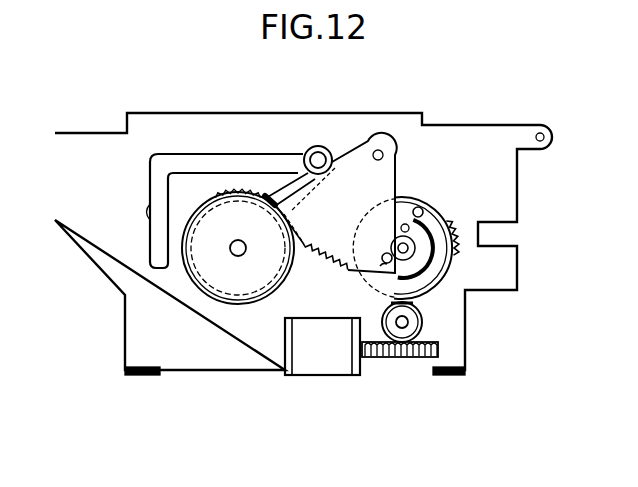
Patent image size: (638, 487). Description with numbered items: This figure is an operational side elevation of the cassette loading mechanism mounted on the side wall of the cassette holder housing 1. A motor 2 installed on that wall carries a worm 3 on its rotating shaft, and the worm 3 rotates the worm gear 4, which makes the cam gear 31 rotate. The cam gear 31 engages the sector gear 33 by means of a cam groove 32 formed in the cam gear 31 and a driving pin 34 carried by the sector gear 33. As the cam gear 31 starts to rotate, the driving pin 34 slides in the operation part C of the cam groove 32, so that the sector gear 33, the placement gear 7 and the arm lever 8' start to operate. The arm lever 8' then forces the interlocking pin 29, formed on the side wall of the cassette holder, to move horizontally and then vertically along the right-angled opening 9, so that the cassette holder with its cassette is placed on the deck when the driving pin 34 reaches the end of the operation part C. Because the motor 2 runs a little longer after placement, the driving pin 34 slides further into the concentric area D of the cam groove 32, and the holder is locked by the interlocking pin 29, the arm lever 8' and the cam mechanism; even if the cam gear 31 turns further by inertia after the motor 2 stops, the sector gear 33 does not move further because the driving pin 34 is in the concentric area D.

The cassette holder housing 1 is at (146, 113).
The motor 2 is at (297, 357).
The worm 3 is at (414, 358).
The worm gear 4 is at (425, 327).
The placement gear 7 is at (193, 286).
The arm lever 8' is at (311, 113).
The right-angled opening 9 is at (150, 218).
The interlocking pin 29 is at (325, 146).
The cam gear 31 is at (379, 272).
The cam groove 32 is at (427, 280).
The sector gear 33 is at (361, 148).
The driving pin 34 is at (383, 262).
The operation part C is at (419, 211).
The concentric area D is at (449, 252).